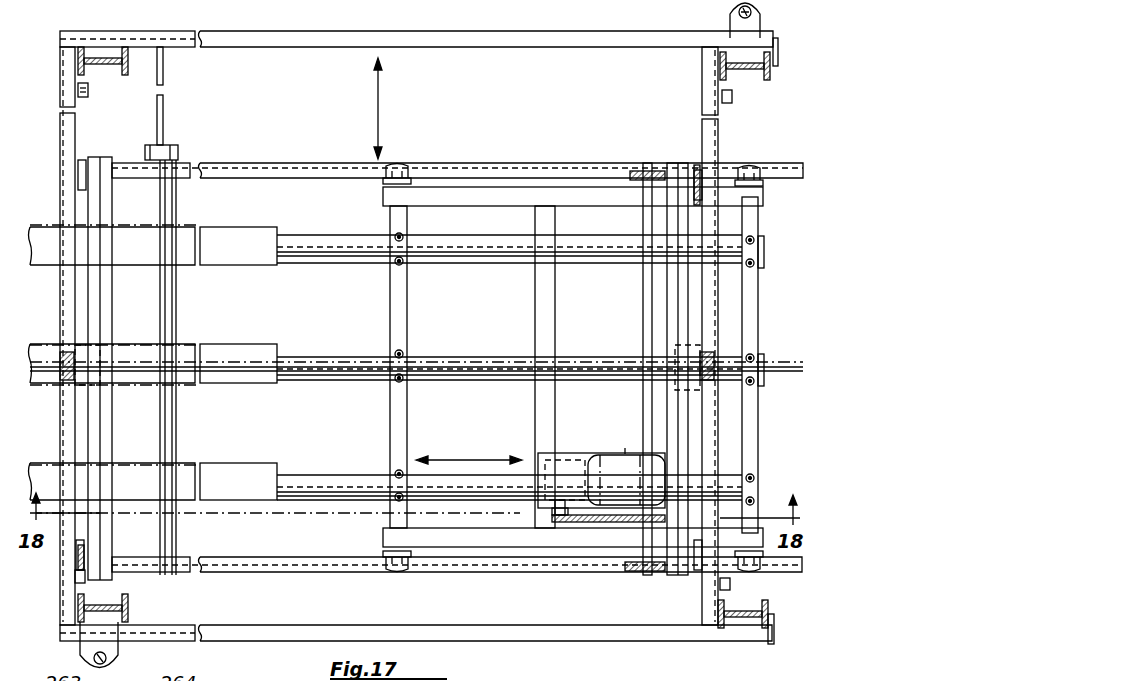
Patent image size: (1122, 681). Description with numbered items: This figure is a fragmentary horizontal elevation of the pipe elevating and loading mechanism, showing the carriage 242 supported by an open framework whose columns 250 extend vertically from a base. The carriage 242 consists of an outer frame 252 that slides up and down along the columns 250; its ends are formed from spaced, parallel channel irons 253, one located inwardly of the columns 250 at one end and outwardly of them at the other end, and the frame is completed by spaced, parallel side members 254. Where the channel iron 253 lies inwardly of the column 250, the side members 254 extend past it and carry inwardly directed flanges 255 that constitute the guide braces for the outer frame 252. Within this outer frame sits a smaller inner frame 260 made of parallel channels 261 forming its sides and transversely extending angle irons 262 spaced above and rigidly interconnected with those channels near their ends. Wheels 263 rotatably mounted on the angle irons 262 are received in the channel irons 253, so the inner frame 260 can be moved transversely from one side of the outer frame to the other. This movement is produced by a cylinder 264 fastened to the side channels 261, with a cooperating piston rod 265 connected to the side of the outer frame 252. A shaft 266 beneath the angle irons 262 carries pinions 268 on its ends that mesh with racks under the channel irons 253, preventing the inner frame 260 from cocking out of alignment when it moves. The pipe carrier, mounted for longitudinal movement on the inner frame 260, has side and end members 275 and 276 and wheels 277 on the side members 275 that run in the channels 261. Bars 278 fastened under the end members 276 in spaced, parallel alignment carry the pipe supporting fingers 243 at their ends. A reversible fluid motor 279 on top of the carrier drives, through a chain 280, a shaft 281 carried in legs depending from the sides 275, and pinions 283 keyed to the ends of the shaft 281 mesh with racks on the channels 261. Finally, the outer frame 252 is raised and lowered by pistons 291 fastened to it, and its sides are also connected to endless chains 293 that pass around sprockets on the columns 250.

The carriage 242 is at (390, 438).
The pipe supporting fingers 243 is at (230, 230).
The columns 250 is at (102, 62).
The outer frame 252 is at (533, 36).
The channel irons 253 is at (75, 130).
The side members 254 is at (292, 42).
The inwardly directed flanges 255 is at (776, 64).
The inner frame 260 is at (461, 160).
The channels 261 is at (326, 168).
The angle irons 262 is at (672, 310).
The wheels 263 is at (82, 178).
The cylinder 264 is at (178, 440).
The piston rod 265 is at (168, 106).
The shaft 266 is at (440, 366).
The pinions 268 is at (68, 383).
The side members 275 is at (466, 200).
The end members 276 is at (404, 426).
The wheels 277 is at (382, 188).
The bars 278 is at (315, 265).
The reversible fluid motor 279 is at (614, 454).
The chain 280 is at (602, 523).
The shaft 281 is at (643, 345).
The pinions 283 is at (630, 170).
The pistons 291 is at (756, 14).
The endless chains 293 is at (89, 90).